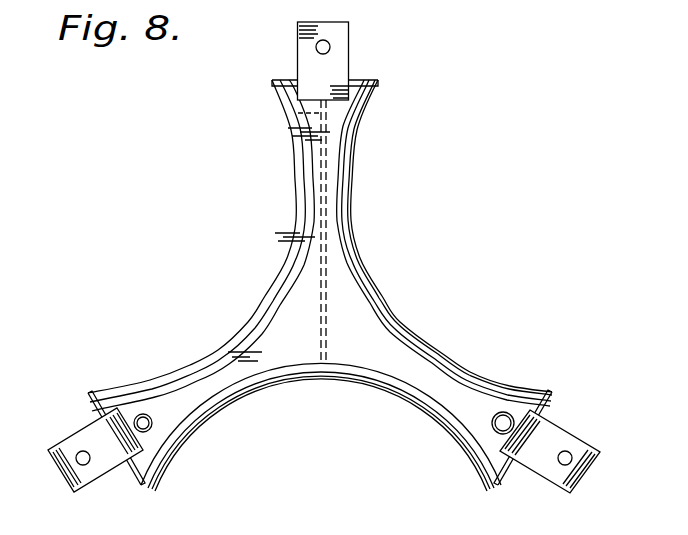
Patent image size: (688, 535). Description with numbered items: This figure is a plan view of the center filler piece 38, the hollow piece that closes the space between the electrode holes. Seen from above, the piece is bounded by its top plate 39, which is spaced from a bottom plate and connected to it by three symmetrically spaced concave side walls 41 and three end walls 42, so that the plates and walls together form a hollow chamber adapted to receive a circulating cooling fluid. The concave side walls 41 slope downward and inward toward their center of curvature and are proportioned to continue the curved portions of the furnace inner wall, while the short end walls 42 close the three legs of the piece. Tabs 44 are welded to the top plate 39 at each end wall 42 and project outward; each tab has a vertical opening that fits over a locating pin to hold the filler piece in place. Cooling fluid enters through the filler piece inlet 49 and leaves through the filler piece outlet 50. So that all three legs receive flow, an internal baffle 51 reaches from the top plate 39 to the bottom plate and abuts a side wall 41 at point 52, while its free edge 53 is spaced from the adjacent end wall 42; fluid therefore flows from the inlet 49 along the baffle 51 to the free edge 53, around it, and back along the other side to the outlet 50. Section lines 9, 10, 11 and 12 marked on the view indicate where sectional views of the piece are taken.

The center filler piece 38 is at (316, 248).
The top plate 39 is at (353, 308).
The concave side walls 41 is at (296, 237).
The end walls 42 is at (358, 84).
The tabs 44 is at (345, 38).
The filler piece inlet 49 is at (148, 416).
The filler piece outlet 50 is at (507, 412).
The internal baffle 51 is at (352, 178).
The point 52 is at (320, 378).
The free edge 53 is at (298, 113).
The section line 9- 9 is at (268, 10).
The section line 10- 10 is at (478, 407).
The section line 11- 11 is at (55, 475).
The section line 12- 12 is at (245, 78).